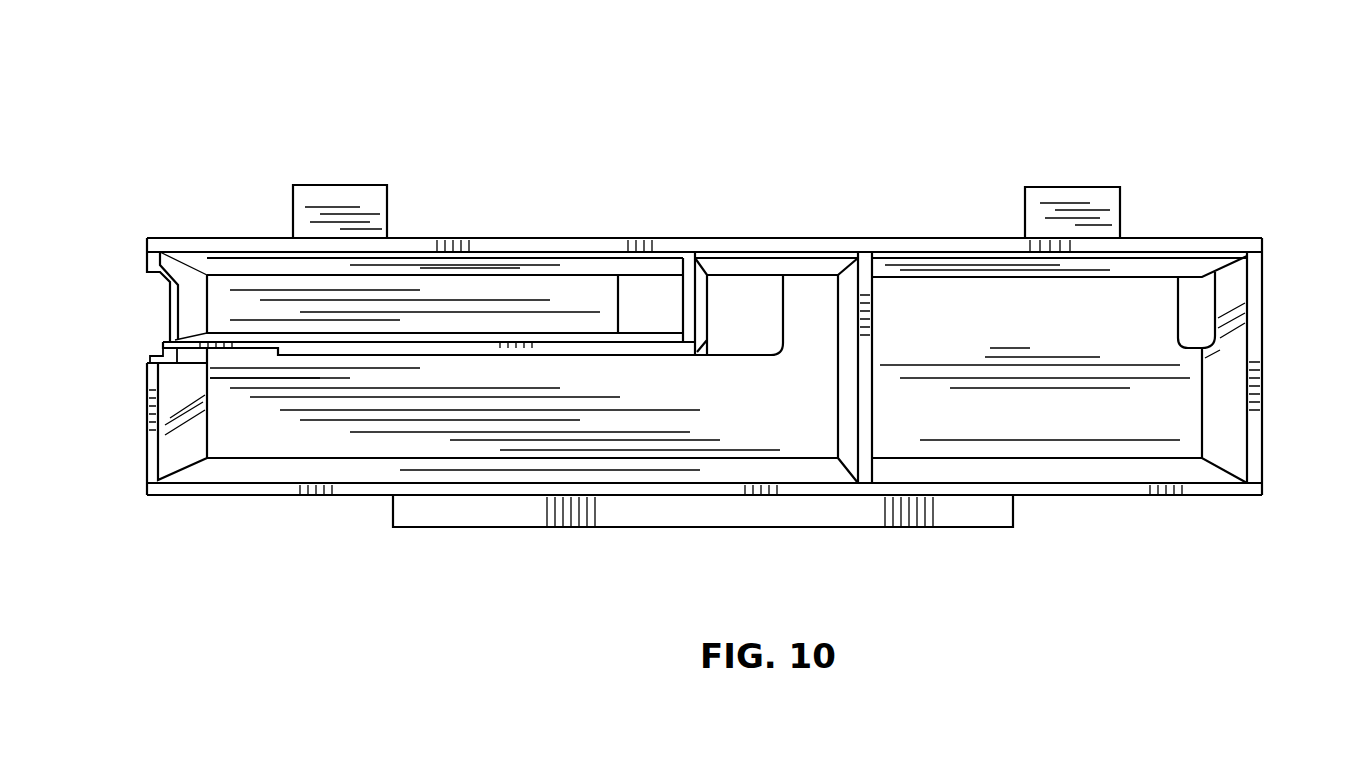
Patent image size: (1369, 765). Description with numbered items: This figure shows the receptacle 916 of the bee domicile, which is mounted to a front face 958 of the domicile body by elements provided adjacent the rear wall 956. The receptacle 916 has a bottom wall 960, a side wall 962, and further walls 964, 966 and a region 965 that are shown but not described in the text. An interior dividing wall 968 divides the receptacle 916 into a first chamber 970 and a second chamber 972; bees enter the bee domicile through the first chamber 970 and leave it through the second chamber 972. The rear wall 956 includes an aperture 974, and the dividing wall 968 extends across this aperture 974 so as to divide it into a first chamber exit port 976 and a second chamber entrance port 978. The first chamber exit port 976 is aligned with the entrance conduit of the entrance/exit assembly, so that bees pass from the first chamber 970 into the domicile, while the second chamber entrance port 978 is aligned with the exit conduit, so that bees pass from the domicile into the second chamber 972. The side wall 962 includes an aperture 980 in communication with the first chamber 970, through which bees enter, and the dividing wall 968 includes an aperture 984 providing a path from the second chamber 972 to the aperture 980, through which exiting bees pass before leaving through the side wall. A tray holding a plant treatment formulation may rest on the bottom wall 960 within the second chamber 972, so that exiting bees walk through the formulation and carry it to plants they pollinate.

The receptacle 916 is at (1228, 130).
The rear wall 956 is at (1165, 420).
The front face 958 is at (775, 245).
The bottom wall 960 is at (1090, 492).
The side wall 962 is at (147, 462).
The end wall 964 is at (1255, 282).
The interior surface 965 is at (258, 430).
The mounting block 966 is at (1108, 207).
The interior dividing wall 968 is at (583, 348).
The first chamber 970 is at (600, 310).
The second chamber 972 is at (808, 400).
The aperture 974 is at (735, 294).
The first chamber exit port 976 is at (638, 292).
The second chamber entrance port 978 is at (763, 332).
The aperture 980 is at (157, 297).
The aperture 984 is at (224, 357).